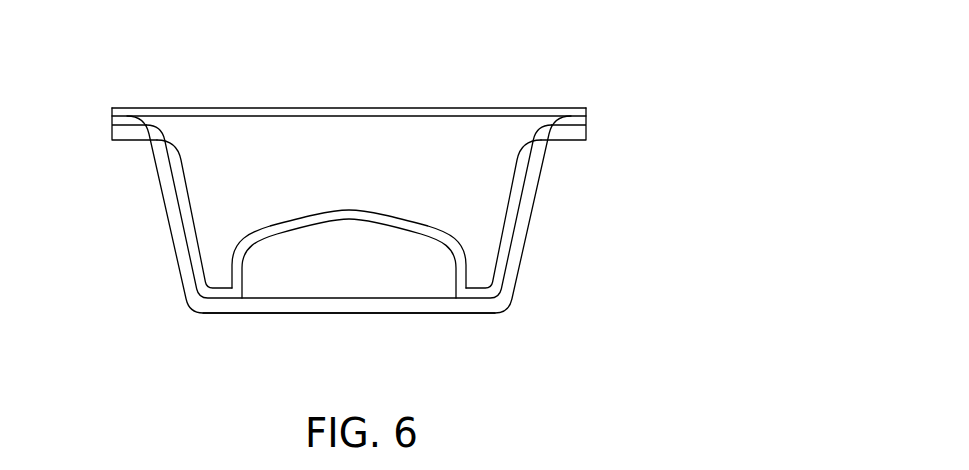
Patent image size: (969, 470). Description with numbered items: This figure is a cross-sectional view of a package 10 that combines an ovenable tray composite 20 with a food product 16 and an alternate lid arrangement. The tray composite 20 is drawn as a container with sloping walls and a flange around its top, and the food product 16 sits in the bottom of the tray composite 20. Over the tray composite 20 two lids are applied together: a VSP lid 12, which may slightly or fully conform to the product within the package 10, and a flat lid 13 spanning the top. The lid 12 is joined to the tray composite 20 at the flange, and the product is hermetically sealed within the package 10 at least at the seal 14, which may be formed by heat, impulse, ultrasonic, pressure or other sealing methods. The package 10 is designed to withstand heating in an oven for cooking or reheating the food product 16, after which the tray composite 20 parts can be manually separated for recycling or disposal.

The package 10 is at (552, 75).
The lid 12 is at (132, 122).
The flat lid 13 is at (257, 108).
The seal 14 is at (567, 128).
The food product 16 is at (352, 240).
The ovenable tray composite 20 is at (436, 338).